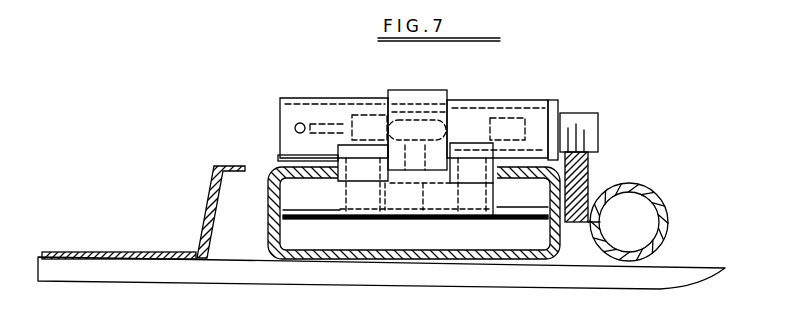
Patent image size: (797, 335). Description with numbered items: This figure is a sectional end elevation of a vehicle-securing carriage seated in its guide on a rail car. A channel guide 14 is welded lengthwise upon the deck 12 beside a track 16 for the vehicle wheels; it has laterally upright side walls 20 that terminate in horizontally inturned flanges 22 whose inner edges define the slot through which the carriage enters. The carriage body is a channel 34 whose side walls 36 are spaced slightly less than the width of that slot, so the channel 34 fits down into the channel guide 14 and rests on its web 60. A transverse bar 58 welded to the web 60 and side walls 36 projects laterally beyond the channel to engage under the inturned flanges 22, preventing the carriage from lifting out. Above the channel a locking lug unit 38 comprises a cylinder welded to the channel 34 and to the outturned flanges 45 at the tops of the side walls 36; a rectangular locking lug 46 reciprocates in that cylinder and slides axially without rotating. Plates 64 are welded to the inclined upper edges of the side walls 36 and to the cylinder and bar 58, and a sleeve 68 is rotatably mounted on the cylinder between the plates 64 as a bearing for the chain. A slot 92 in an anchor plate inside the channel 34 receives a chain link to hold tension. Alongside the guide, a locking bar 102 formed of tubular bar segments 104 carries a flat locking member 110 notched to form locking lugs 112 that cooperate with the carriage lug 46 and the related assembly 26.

The deck 12 is at (688, 268).
The channel guide 14 is at (433, 258).
The track 16 is at (117, 255).
The side wall 20 is at (268, 237).
The inturned flange 22 is at (278, 152).
The end assembly 26 is at (607, 118).
The channel 34 is at (378, 258).
The side wall 36 is at (500, 236).
The locking lug unit 38 is at (330, 97).
The outturned flange 45 is at (333, 122).
The locking lug 46 is at (584, 125).
The transverse bar 58 is at (300, 193).
The web 60 is at (418, 221).
The plate 64 is at (469, 158).
The sleeve 68 is at (430, 93).
The slot 92 is at (425, 208).
The locking bar 102 is at (677, 197).
The tubular bar segment 104 is at (668, 222).
The locking member 110 is at (590, 184).
The locking lug 112 is at (596, 150).